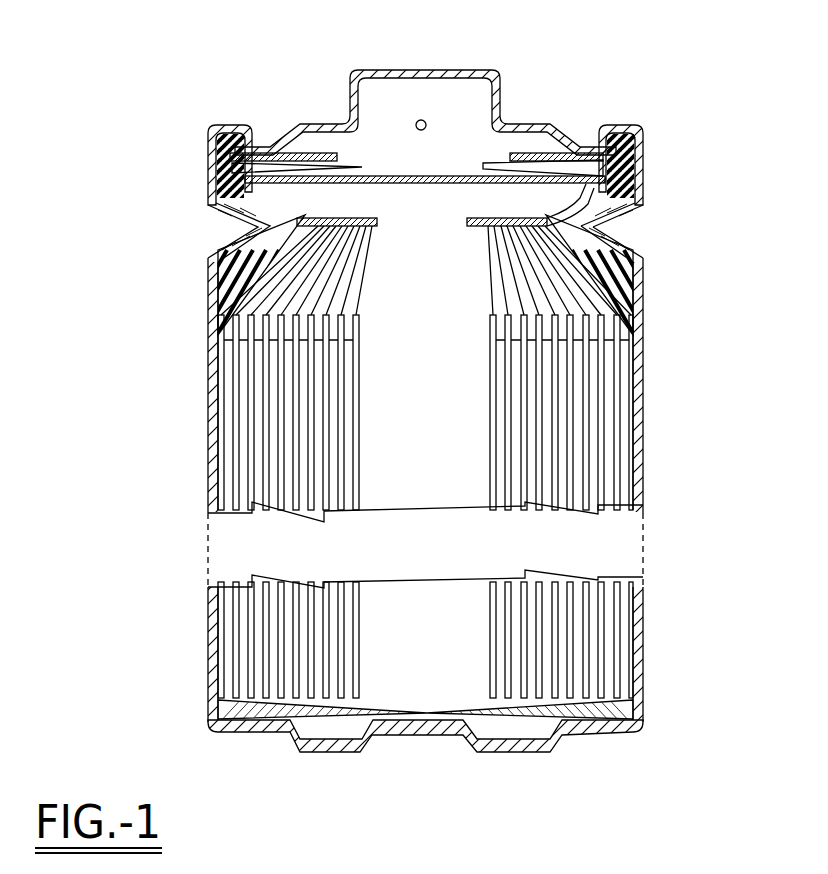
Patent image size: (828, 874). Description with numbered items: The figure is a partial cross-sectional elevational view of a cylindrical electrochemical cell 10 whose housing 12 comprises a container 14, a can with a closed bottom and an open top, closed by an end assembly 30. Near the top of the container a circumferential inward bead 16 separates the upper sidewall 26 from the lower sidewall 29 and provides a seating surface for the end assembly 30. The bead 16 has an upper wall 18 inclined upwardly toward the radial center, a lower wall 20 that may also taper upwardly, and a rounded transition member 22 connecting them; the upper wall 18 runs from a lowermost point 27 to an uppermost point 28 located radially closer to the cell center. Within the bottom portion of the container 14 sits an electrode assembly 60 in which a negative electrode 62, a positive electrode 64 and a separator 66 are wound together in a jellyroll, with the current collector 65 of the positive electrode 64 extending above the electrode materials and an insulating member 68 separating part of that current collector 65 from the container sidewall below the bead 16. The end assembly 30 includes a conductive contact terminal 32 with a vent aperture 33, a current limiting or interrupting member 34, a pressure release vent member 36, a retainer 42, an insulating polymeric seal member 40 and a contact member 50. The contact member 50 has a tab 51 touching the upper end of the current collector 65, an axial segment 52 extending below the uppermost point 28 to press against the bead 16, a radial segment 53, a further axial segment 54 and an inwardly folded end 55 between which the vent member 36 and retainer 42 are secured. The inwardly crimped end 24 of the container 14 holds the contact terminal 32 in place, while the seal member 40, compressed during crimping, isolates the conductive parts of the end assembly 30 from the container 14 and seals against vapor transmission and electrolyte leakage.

The cell 10 is at (192, 102).
The housing 12 is at (196, 405).
The container 14 is at (212, 450).
The bead 16 is at (176, 218).
The upper wall 18 is at (222, 211).
The lower wall 20 is at (212, 246).
The transition member 22 is at (235, 222).
The crimped end 24 is at (642, 118).
The upper sidewall 26 is at (197, 150).
The lowermost point 27 is at (617, 207).
The uppermost point 28 is at (637, 227).
The lower sidewall 29 is at (642, 343).
The end assembly 30 is at (425, 62).
The conductive contact terminal 32 is at (503, 93).
The vent aperture 33 is at (421, 120).
The current limiting or interrupting member 34 is at (520, 146).
The vent member 36 is at (388, 177).
The seal member 40 is at (632, 186).
The retainer 42 is at (510, 163).
The contact member 50 is at (464, 234).
The tab 51 is at (467, 214).
The axial segment 52 is at (567, 187).
The radial segment 53 is at (637, 188).
The further axial segment 54 is at (636, 157).
The inwardly folded end 55 is at (592, 125).
The electrode assembly 60 is at (475, 433).
The negative electrode 62 is at (627, 380).
The positive electrode 64 is at (620, 332).
The current collector 65 is at (612, 292).
The separator 66 is at (620, 418).
The insulating member 68 is at (630, 263).